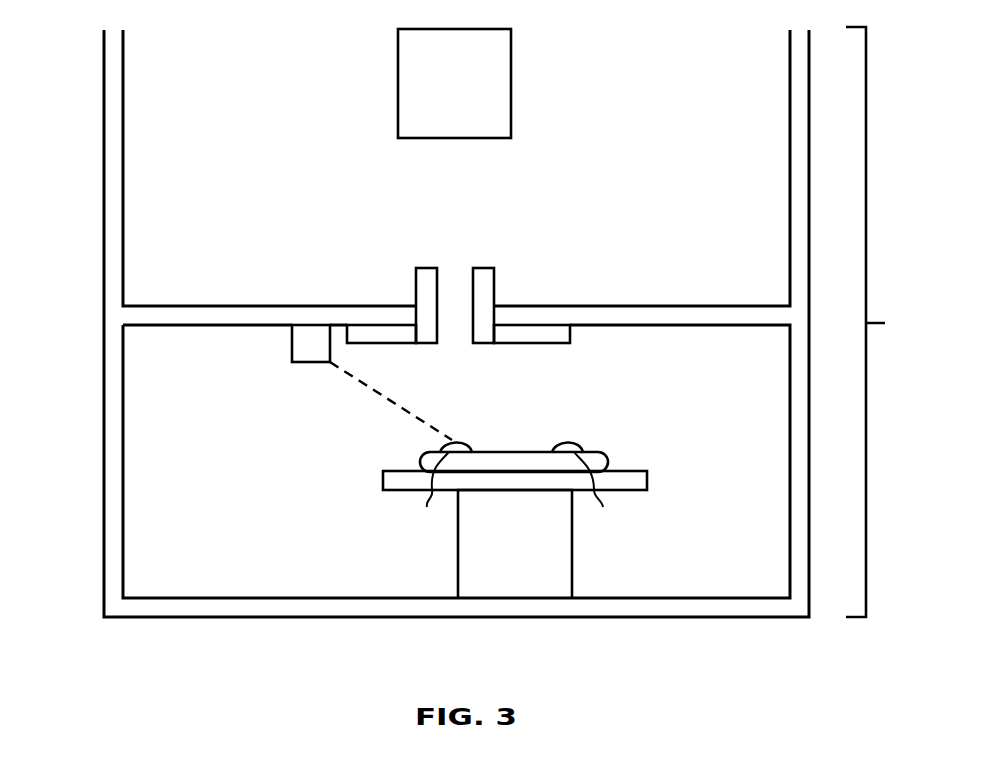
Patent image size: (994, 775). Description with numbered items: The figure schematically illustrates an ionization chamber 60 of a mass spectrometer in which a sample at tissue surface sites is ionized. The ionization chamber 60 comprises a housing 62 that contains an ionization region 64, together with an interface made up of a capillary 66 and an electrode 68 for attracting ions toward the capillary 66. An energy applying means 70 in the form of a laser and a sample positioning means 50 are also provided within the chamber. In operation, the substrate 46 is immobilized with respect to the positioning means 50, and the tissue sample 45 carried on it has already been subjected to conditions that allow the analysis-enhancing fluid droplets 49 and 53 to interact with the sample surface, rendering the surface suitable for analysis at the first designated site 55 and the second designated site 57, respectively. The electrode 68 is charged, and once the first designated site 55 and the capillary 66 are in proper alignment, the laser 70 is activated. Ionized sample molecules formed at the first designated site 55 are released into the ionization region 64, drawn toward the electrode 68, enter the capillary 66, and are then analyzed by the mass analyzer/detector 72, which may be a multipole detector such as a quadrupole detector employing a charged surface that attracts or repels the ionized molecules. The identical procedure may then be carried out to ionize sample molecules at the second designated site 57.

The ionization chamber 60 is at (881, 322).
The housing 62 is at (104, 150).
The ionization region 64 is at (496, 397).
The capillary 66 is at (455, 270).
The electrode 68 is at (377, 343).
The energy applying means 70 is at (292, 345).
The mass analyzer/detector 72 is at (511, 54).
The tissue sample 45 is at (608, 462).
The substrate 46 is at (647, 481).
The analysis-enhancing fluid droplet 49 is at (470, 445).
The analysis-enhancing fluid droplet 53 is at (568, 444).
The first designated site 55 is at (429, 496).
The second designated site 57 is at (595, 496).
The sample positioning means 50 is at (572, 551).